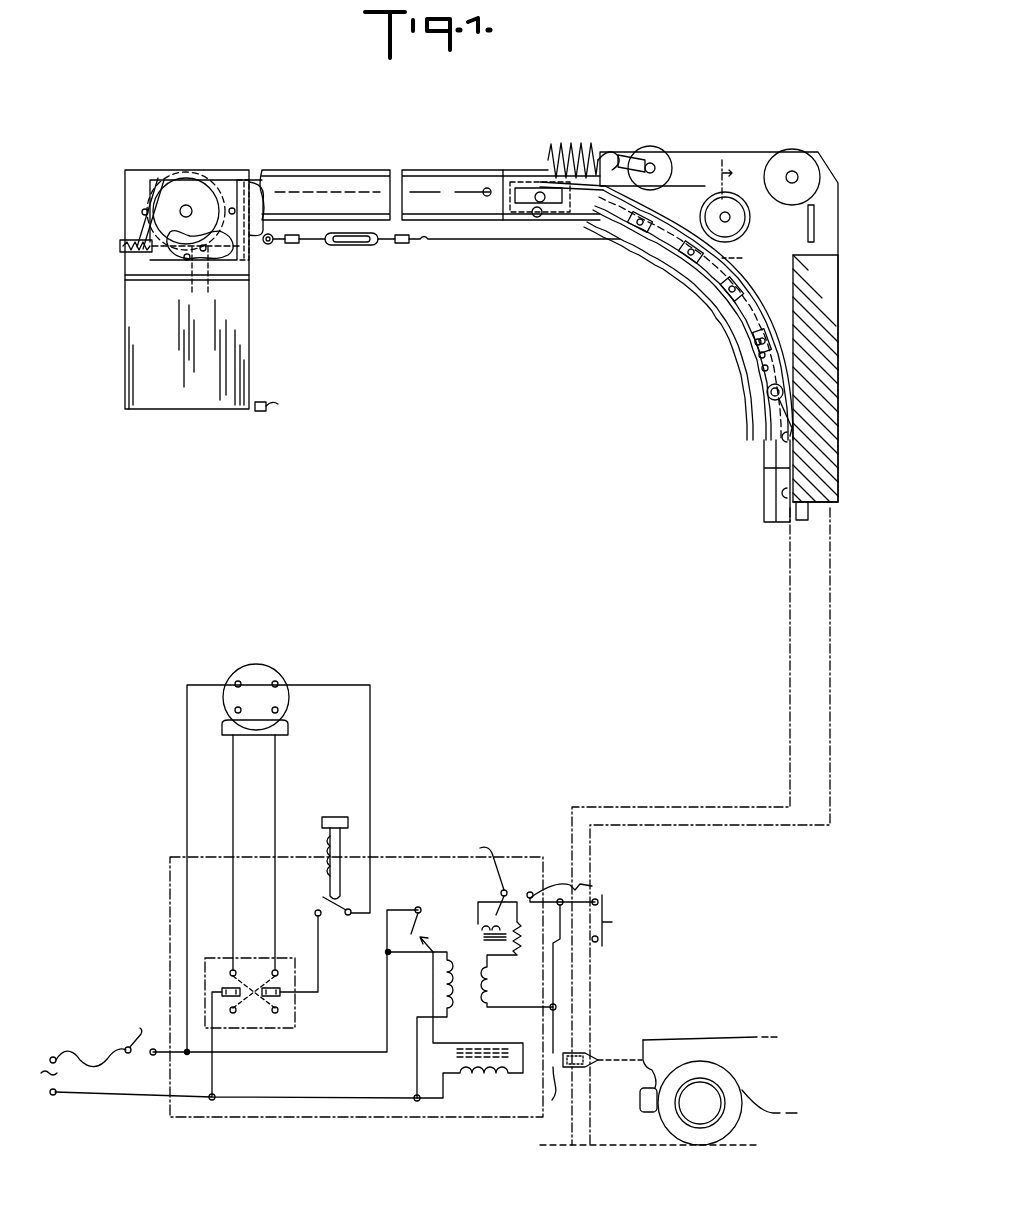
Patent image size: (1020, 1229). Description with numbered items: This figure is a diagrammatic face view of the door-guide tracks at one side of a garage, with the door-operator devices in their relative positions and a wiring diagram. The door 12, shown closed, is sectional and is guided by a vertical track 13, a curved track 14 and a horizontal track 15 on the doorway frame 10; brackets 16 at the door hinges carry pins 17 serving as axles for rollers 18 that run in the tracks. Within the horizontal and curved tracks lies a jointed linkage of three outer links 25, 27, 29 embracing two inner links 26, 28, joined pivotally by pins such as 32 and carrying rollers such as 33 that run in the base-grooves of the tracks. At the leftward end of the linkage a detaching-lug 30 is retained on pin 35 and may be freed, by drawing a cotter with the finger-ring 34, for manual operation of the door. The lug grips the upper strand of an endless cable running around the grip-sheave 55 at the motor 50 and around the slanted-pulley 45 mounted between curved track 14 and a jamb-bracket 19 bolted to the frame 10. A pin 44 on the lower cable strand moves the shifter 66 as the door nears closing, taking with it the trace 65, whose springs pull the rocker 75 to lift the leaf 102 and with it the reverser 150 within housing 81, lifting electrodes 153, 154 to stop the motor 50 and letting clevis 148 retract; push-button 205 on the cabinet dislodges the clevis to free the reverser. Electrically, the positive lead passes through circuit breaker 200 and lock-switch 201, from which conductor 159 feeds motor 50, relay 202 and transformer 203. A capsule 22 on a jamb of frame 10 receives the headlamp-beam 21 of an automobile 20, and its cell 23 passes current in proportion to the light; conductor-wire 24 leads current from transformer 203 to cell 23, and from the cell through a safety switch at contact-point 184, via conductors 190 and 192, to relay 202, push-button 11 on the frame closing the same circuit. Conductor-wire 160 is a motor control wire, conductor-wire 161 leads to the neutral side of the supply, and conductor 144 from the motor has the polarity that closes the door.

The doorway frame 10 is at (583, 867).
The push-button 11 is at (612, 922).
The door 12 is at (803, 337).
The vertical track 13 is at (762, 500).
The curved track 14 is at (722, 308).
The horizontal track 15 is at (440, 241).
The bracket 16 is at (770, 425).
The pin 17 is at (766, 396).
The roller 18 is at (800, 368).
The jamb-bracket 19 is at (838, 210).
The automobile 20 is at (700, 1040).
The headlamp-beam 21 is at (615, 1058).
The capsule 22 is at (585, 1050).
The cell 23 is at (588, 1068).
The conductor-wire 24 is at (552, 1100).
The outer link 25 is at (748, 365).
The inner link 26 is at (734, 332).
The outer link 27 is at (684, 276).
The inner link 28 is at (630, 250).
The outer link 29 is at (600, 230).
The detaching-lug 30 is at (520, 214).
The pin 32 is at (703, 283).
The roller 33 is at (655, 270).
The finger-ring 34 is at (538, 218).
The pin 35 is at (541, 190).
The pin 44 is at (487, 187).
The slanted-pulley 45 is at (740, 230).
The motor 50 is at (214, 182).
The grip-sheave 55 is at (194, 186).
The trace 65 is at (130, 250).
The shifter 66 is at (262, 183).
The rocker 75 is at (176, 262).
The housing 81 is at (148, 411).
The leaf 102 is at (203, 265).
The conductor 144 is at (232, 845).
The clevis 148 is at (277, 846).
The reverser 150 is at (258, 985).
The electrode 153 is at (280, 1000).
The electrode 154 is at (222, 992).
The conductor 159 is at (187, 826).
The conductor-wire 160 is at (371, 722).
The conductor-wire 161 is at (214, 1062).
The contact-point 184 is at (558, 868).
The conductor 190 is at (590, 887).
The conductor 192 is at (488, 852).
The circuit breaker 200 is at (85, 1052).
The lock-switch 201 is at (140, 1030).
The relay 202 is at (490, 915).
The transformer 203 is at (448, 962).
The push-button 205 is at (286, 413).